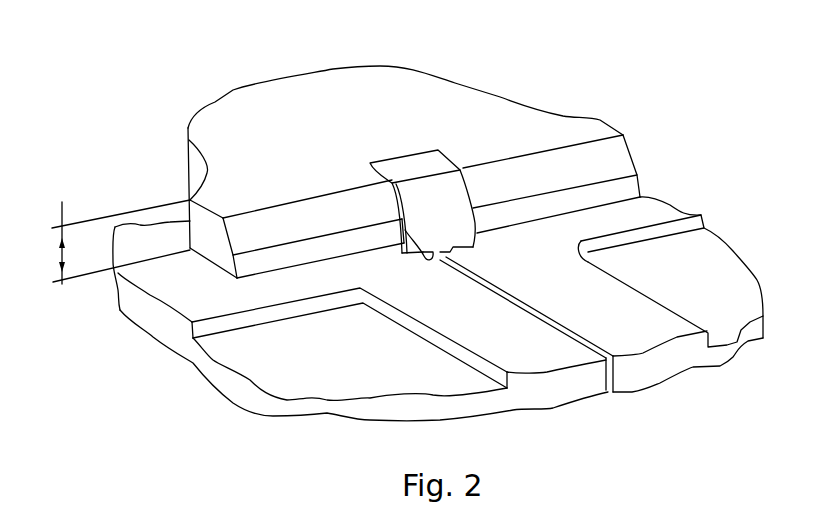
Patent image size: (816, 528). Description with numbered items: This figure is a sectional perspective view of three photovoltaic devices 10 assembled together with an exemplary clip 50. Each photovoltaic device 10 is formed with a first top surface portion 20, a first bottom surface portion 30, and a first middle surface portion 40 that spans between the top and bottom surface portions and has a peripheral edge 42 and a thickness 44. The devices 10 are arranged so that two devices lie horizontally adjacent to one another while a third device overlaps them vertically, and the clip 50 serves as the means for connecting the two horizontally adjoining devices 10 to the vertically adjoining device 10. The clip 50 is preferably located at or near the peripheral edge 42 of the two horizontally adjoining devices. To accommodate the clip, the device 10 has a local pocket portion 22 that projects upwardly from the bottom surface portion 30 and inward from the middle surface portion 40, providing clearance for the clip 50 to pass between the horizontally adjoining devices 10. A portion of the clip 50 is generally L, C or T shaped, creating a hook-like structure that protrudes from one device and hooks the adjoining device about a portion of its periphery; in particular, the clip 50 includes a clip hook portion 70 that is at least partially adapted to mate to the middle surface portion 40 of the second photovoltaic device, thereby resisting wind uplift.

The photovoltaic device 10 is at (437, 104).
The first top surface portion 20 is at (558, 234).
The local pocket portion 22 is at (402, 224).
The first bottom surface portion 30 is at (331, 429).
The first middle surface portion 40 is at (640, 132).
The peripheral edge 42 is at (550, 170).
The thickness 44 is at (119, 231).
The clip 50 is at (411, 164).
The clip hook portion 70 is at (422, 205).